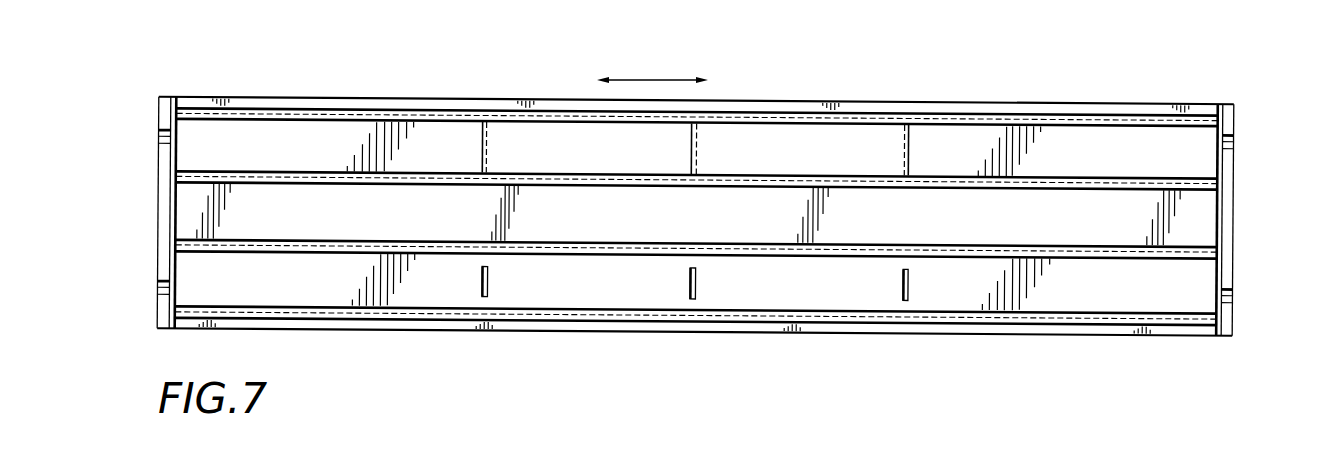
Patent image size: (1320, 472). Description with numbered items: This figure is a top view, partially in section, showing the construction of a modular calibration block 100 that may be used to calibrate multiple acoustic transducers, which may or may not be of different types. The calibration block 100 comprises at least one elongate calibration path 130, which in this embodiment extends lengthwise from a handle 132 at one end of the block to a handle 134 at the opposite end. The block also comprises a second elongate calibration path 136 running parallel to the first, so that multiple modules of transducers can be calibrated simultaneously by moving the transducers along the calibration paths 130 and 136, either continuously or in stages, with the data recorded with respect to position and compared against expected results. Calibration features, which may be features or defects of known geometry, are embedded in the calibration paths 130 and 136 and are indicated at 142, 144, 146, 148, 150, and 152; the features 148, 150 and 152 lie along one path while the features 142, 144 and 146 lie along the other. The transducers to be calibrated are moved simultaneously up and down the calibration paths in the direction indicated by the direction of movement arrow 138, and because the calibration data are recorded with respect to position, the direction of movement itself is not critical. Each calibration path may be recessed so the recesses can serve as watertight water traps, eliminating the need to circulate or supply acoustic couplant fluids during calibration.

The calibration block 100 is at (1053, 90).
The elongate calibration path 130 is at (948, 287).
The handle 132 is at (165, 223).
The handle 134 is at (1232, 227).
The second elongate calibration path 136 is at (313, 141).
The direction of movement arrow 138 is at (651, 78).
The calibration feature 142 is at (481, 289).
The calibration feature 144 is at (690, 293).
The calibration feature 146 is at (902, 289).
The calibration feature 148 is at (485, 143).
The calibration feature 150 is at (697, 149).
The calibration feature 152 is at (908, 152).